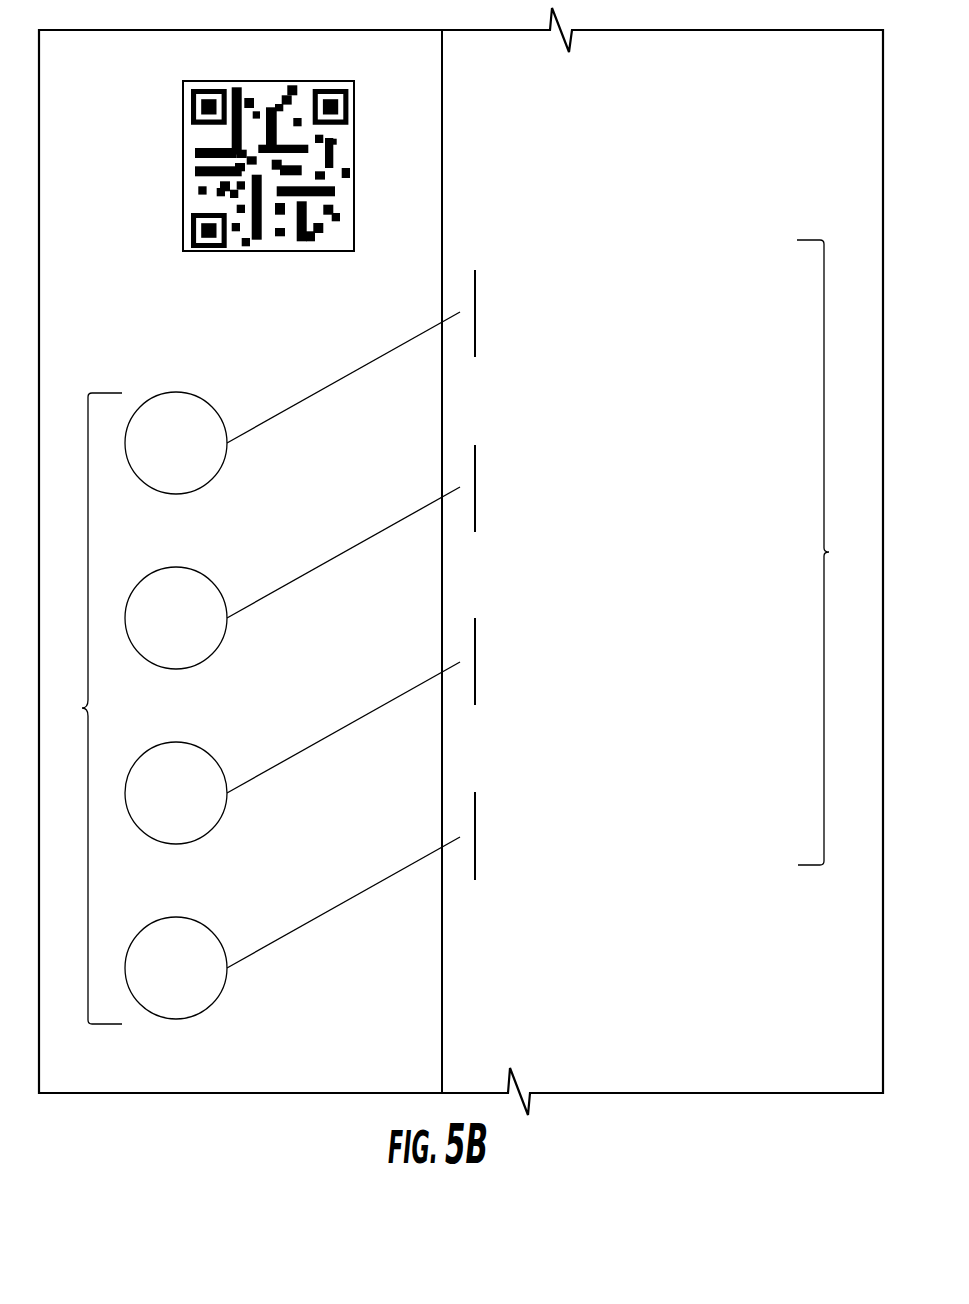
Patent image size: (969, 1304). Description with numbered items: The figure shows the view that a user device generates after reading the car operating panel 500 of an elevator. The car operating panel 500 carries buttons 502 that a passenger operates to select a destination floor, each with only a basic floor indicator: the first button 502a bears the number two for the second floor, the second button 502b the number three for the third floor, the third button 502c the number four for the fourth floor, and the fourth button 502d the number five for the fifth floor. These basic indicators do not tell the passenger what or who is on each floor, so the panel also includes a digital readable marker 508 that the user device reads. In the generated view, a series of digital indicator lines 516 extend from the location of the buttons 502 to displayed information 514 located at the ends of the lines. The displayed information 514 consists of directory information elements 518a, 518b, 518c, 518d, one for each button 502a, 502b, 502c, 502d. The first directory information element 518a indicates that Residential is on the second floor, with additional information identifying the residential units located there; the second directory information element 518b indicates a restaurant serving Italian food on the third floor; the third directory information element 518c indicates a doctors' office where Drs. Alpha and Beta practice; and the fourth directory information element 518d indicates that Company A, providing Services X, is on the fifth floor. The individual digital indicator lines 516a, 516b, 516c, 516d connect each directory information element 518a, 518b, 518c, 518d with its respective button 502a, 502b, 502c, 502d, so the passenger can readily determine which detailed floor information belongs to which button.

The car operating panel 500 is at (433, 214).
The digital readable marker 508 is at (355, 127).
The buttons 502 is at (152, 722).
The first button 502a is at (178, 1019).
The second button 502b is at (168, 844).
The third button 502c is at (168, 669).
The fourth button 502d is at (168, 494).
The displayed information 514 is at (672, 552).
The digital indicator lines 516 is at (377, 656).
The digital indicator line 516a is at (360, 891).
The digital indicator line 516b is at (360, 716).
The digital indicator line 516c is at (360, 541).
The digital indicator line 516d is at (360, 366).
The first directory information element 518a is at (703, 815).
The second directory information element 518b is at (708, 628).
The third directory information element 518c is at (746, 458).
The fourth directory information element 518d is at (712, 311).